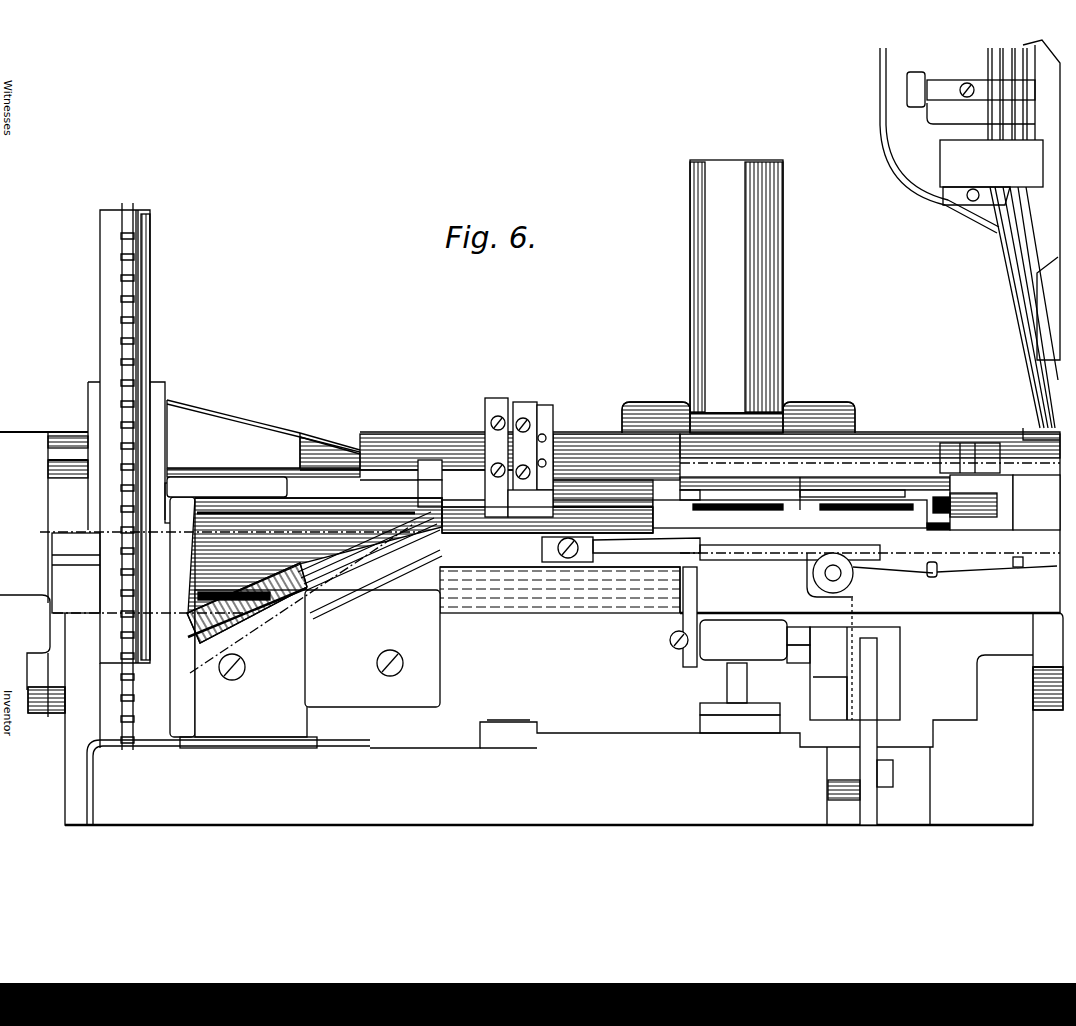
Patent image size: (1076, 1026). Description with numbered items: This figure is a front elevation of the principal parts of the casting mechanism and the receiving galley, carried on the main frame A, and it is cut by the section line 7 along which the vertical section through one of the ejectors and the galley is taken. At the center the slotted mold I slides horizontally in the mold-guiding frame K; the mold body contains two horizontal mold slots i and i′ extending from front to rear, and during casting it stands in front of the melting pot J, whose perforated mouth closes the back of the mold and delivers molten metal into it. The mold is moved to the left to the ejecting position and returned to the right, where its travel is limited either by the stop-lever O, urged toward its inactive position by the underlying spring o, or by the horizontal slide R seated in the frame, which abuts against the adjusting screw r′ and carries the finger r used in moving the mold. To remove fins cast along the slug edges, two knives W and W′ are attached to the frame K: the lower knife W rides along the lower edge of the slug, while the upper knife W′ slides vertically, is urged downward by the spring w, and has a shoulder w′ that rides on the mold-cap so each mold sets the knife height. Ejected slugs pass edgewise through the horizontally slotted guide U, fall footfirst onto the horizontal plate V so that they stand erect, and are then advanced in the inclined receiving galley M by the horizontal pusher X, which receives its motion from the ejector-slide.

The main frame A is at (516, 628).
The section line 7— 7 is at (252, 800).
The mold-guiding frame K is at (680, 507).
The lower knife W is at (493, 452).
The upper knife W′ is at (528, 403).
The spring w is at (551, 470).
The shoulder w′ is at (527, 490).
The melting pot J is at (798, 400).
The horizontal plate V is at (315, 558).
The horizontally slotted guide U is at (258, 508).
The receiving galley M is at (247, 603).
The horizontal pusher X is at (258, 628).
The mold I is at (790, 502).
The mold slot i is at (750, 510).
The mold slot i′ is at (872, 510).
The horizontal slide R is at (981, 502).
The finger r is at (947, 504).
The adjusting screw r′ is at (1015, 478).
The stop-lever O is at (880, 572).
The spring o is at (995, 568).